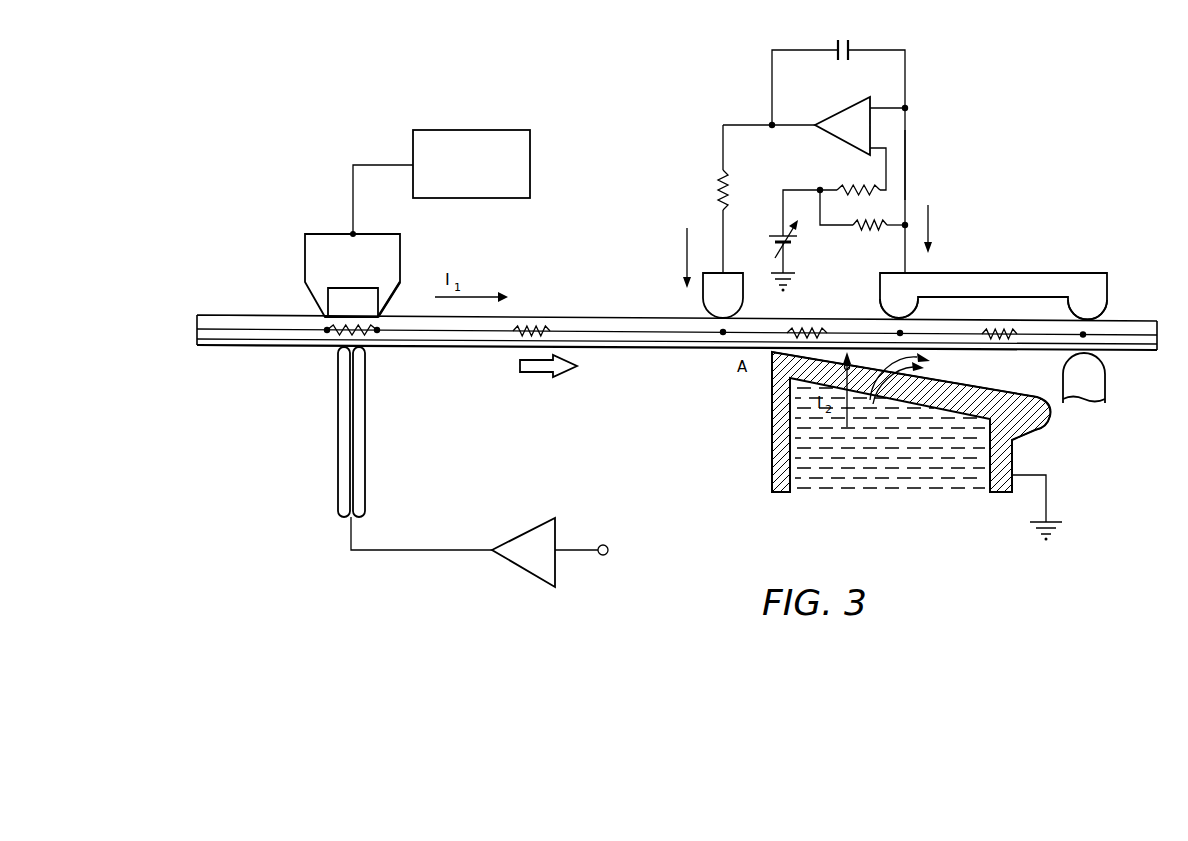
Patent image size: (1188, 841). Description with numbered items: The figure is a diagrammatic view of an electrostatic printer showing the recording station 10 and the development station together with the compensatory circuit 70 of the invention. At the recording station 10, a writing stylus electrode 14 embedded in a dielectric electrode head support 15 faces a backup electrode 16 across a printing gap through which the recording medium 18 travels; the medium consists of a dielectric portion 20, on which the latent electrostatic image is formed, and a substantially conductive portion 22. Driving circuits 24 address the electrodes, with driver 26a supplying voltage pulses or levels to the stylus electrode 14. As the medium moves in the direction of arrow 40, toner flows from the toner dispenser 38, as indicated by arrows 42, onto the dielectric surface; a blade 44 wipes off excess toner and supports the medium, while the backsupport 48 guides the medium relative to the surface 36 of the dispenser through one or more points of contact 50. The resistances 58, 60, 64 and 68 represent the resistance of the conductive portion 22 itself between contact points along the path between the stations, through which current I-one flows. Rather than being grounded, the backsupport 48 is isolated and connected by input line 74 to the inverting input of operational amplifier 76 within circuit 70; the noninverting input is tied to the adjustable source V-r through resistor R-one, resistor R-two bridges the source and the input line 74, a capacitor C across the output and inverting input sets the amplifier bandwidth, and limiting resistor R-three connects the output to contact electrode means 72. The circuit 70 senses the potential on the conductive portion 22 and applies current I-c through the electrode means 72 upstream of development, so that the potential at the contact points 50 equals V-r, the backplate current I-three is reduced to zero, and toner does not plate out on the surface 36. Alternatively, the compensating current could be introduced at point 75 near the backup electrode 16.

The recording station 10 is at (300, 305).
The writing stylus electrode 14 is at (366, 430).
The dielectric electrode head support 15 is at (338, 437).
The backup electrode 16 is at (332, 238).
The recording medium 18 is at (227, 315).
The dielectric portion 20 is at (273, 345).
The conductive portion 22 is at (236, 332).
The driving circuits 24 is at (518, 130).
The driver 26a is at (530, 527).
The surface of dispenser 36 is at (1015, 393).
The toner dispenser 38 is at (772, 440).
The arrow 40 is at (527, 377).
The arrows 42 is at (882, 385).
The blade 44 is at (1105, 376).
The backsupport 48 is at (1013, 273).
The points of contact 50 is at (880, 313).
The resistance 58 is at (340, 333).
The resistance 60 is at (540, 325).
The resistance 64 is at (818, 330).
The resistance 68 is at (1008, 329).
The compensatory circuit 70 is at (825, 154).
The contact electrode means 72 is at (744, 294).
The input line 74 is at (908, 138).
The point near backup electrodes 75 is at (407, 315).
The operational amplifier 76 is at (832, 117).